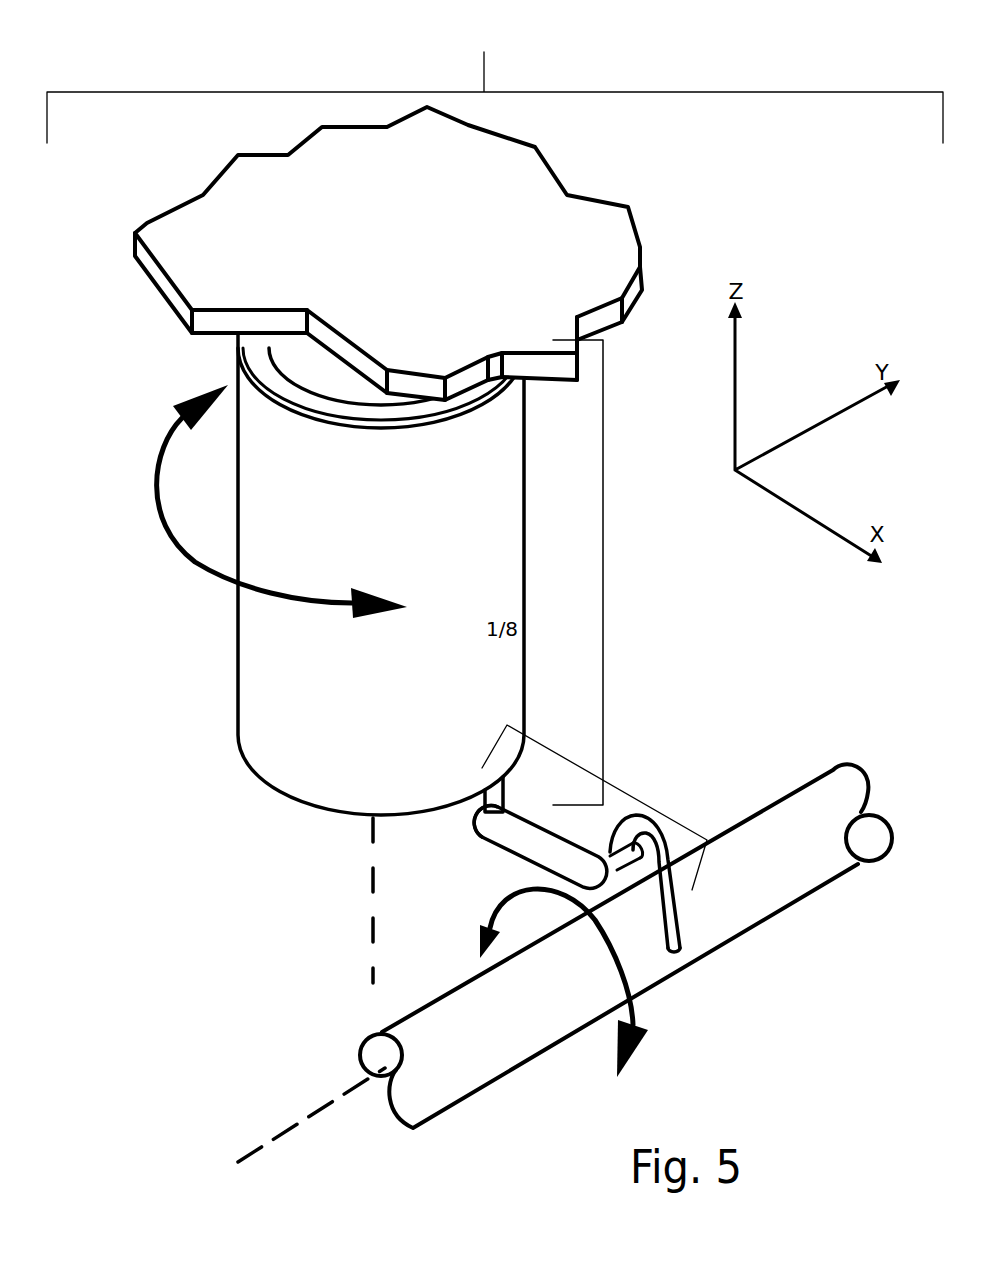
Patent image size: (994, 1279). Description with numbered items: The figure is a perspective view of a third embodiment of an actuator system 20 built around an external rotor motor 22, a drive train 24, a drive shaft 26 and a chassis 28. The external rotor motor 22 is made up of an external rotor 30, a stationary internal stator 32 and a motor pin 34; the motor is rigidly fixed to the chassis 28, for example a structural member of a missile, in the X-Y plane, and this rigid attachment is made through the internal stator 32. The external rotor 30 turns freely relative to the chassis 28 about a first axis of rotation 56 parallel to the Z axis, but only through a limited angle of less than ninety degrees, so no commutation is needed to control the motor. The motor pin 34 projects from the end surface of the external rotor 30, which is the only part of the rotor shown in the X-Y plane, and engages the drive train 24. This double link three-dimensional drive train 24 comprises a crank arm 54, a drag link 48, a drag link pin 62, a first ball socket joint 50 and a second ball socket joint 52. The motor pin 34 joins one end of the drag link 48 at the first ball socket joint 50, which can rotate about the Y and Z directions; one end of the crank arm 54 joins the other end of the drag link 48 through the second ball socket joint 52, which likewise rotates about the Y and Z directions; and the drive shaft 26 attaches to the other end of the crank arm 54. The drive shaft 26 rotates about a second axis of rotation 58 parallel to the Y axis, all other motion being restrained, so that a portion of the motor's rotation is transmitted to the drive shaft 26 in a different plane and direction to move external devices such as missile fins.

The actuator system 20 is at (495, 80).
The chassis 28 is at (379, 249).
The internal stator 32 is at (330, 378).
The external rotor 30 is at (369, 704).
The external rotor motor 22 is at (603, 565).
The motor pin 34 is at (492, 795).
The drive train 24 is at (620, 787).
The drag link 48 is at (535, 842).
The first ball socket joint 50 is at (482, 833).
The second ball socket joint 52 is at (592, 867).
The drag link pin 62 is at (623, 856).
The crank arm 54 is at (615, 895).
The first axis of rotation 56 is at (368, 872).
The drive shaft 26 is at (479, 1039).
The second axis of rotation 58 is at (285, 1127).